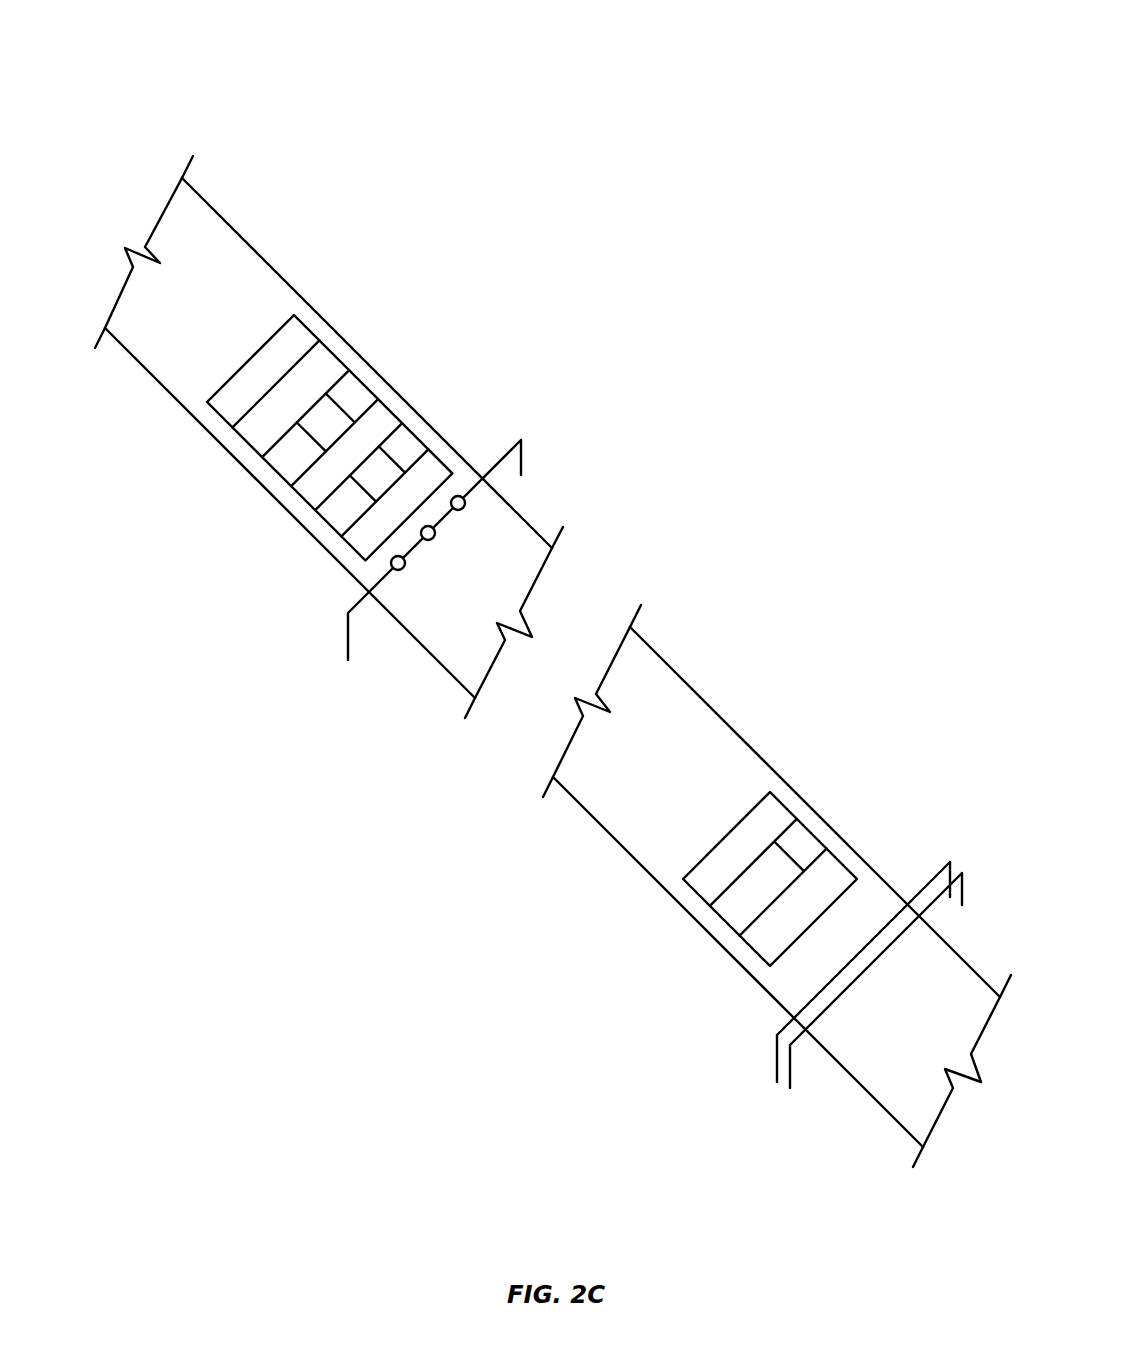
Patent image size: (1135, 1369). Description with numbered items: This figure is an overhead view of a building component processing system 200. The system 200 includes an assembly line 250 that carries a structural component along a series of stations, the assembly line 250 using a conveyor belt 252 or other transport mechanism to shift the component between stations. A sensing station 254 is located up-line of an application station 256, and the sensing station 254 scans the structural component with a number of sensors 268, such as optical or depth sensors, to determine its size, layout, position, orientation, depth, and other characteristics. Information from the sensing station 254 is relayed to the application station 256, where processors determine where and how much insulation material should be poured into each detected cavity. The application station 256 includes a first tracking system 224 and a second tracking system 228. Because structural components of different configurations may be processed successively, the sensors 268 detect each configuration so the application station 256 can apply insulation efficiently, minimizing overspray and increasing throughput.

The building component processing system 200 is at (162, 98).
The assembly line 250 is at (253, 157).
The conveyor belt 252 is at (510, 502).
The sensing station 254 is at (430, 333).
The sensors 268 is at (393, 558).
The application station 256 is at (867, 770).
The first tracking system 224 is at (775, 1037).
The second tracking system 228 is at (790, 1086).